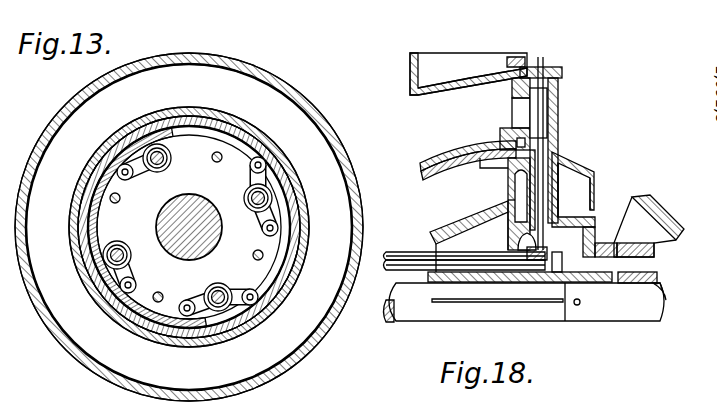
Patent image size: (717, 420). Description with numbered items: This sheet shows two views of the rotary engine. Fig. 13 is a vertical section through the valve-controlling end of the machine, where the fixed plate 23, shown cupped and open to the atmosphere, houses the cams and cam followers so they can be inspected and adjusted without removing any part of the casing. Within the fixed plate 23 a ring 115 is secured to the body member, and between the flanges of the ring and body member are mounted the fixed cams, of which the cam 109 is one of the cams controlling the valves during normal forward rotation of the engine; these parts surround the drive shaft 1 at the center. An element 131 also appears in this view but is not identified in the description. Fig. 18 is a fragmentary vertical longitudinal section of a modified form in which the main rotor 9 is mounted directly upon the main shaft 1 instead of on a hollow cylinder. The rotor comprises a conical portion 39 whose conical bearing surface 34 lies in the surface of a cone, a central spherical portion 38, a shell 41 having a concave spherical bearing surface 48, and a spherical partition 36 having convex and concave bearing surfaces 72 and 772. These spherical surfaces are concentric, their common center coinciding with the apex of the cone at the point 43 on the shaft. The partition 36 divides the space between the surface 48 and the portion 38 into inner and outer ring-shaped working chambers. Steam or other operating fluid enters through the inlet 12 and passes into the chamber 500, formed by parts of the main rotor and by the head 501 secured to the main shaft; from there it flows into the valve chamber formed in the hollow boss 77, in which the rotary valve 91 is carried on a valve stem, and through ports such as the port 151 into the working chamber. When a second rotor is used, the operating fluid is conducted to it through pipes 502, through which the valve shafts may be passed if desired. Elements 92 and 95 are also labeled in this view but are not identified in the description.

In FIG. 13, the fixed plate 23 is at (71, 350).
In FIG. 13, the ring 115 is at (112, 303).
In FIG. 13, the fixed cam 109 is at (76, 211).
In FIG. 13, the drive shaft 1 is at (206, 206).
In FIG. 13, the link 131 is at (166, 163).
In FIG. 18, the shell 41 is at (438, 64).
In FIG. 18, the concave spherical bearing surface 48 is at (466, 81).
In FIG. 18, the port 151 is at (525, 108).
In FIG. 18, the rotary valve 91 is at (548, 108).
In FIG. 18, the cylinder wall 92 is at (558, 152).
In FIG. 18, the convex bearing surface 72 is at (461, 151).
In FIG. 18, the partition 36 is at (497, 127).
In FIG. 18, the concave bearing surface 772 is at (490, 163).
In FIG. 18, the conical portion 39 is at (508, 187).
In FIG. 18, the conical bearing surface 34 is at (508, 198).
In FIG. 18, the central spherical portion 38 is at (458, 214).
In FIG. 18, the main rotor 9 is at (472, 242).
In FIG. 18, the hollow boss 77 is at (559, 193).
In FIG. 18, the head 501 is at (590, 240).
In FIG. 18, the inlet 12 is at (645, 244).
In FIG. 18, the chamber 500 is at (560, 238).
In FIG. 18, the pipes 502 is at (404, 252).
In FIG. 18, the rod 95 is at (400, 272).
In FIG. 18, the apex point 43 is at (500, 302).